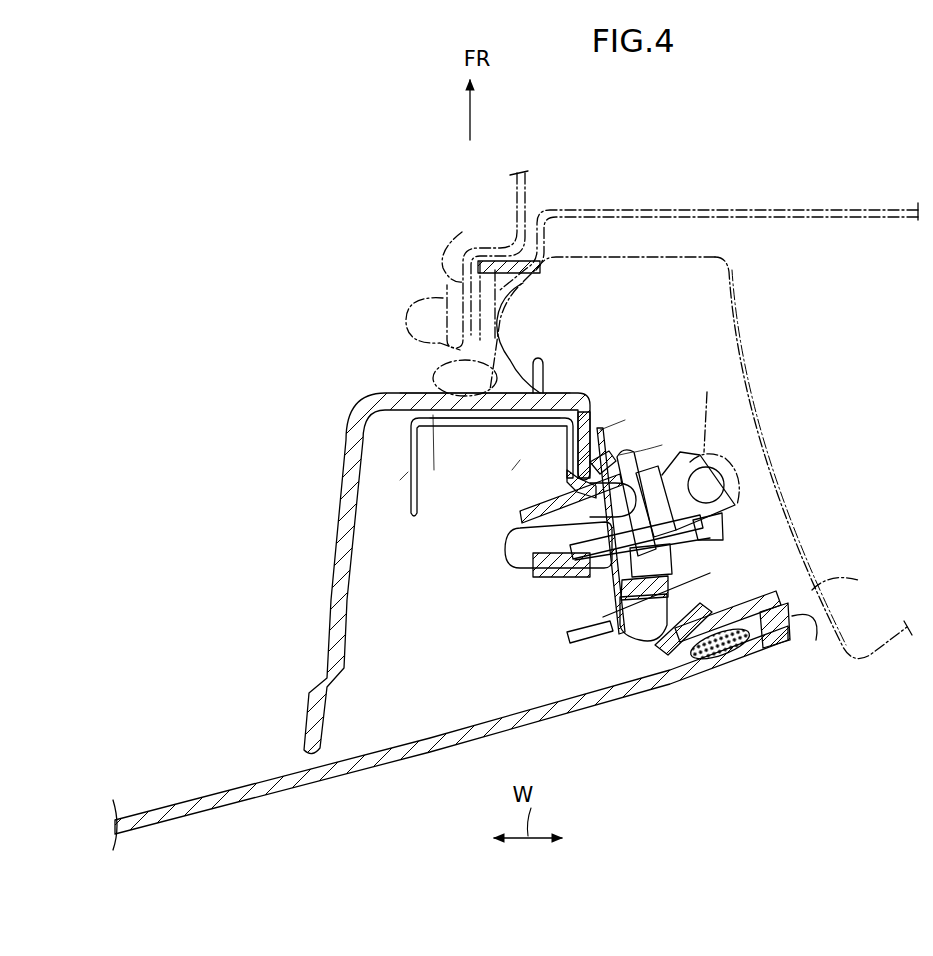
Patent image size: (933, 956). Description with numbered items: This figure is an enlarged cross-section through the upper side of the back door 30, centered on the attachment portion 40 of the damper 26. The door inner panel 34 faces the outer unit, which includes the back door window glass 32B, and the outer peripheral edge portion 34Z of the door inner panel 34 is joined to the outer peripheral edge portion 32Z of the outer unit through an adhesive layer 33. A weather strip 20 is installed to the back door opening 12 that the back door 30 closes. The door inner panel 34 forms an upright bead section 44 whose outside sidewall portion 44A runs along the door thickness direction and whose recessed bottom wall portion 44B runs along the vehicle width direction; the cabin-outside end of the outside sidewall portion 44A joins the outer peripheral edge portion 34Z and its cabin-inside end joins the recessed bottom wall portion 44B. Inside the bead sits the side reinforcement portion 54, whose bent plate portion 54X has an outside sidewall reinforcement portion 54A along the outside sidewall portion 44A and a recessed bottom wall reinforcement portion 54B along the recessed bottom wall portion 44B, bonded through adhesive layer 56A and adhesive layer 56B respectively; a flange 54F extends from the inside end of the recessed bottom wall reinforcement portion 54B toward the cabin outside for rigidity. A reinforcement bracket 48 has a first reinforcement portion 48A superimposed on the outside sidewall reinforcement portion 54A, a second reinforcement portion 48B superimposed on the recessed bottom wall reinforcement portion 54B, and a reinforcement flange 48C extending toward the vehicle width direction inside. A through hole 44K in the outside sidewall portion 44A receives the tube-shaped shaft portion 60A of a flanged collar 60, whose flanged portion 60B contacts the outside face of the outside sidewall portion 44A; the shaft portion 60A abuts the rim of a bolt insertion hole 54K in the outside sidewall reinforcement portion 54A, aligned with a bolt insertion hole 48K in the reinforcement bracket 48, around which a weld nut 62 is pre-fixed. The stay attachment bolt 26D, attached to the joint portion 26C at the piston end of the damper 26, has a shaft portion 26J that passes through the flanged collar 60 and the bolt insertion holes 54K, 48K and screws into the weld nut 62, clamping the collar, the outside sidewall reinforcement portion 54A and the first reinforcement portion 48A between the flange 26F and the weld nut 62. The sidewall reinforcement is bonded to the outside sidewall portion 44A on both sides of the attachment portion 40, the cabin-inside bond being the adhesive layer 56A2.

The back door opening 12 is at (441, 252).
The weather strip 20 is at (492, 318).
The damper 26 is at (718, 420).
The joint portion 26C is at (713, 408).
The stay attachment bolt 26D is at (662, 445).
The flange 26F is at (722, 468).
The shaft portion 26J is at (515, 543).
The back door 30 is at (733, 697).
The back door window glass 32B is at (318, 780).
The outer peripheral edge portion 32Z is at (740, 655).
The adhesive layer 33 is at (700, 652).
The door inner panel 34 is at (358, 390).
The outer peripheral edge portion 34Z is at (724, 613).
The attachment portion 40 is at (616, 426).
The upright bead section 44 is at (368, 682).
The outside sidewall portion 44A is at (630, 645).
The recessed bottom wall portion 44B is at (417, 393).
The through hole 44K is at (603, 418).
The reinforcement bracket 48 is at (600, 606).
The first reinforcement portion 48A is at (600, 594).
The second reinforcement portion 48B is at (500, 428).
The reinforcement flange 48C is at (606, 628).
The bolt insertion hole 48K is at (557, 506).
The side reinforcement portion 54 is at (597, 635).
The outside sidewall reinforcement portion 54A is at (608, 655).
The recessed bottom wall reinforcement portion 54B is at (450, 420).
The flange 54F is at (400, 480).
The bolt insertion hole 54K is at (657, 452).
The bent plate portion 54X is at (512, 470).
The adhesive layer 56A is at (632, 640).
The adhesive layer 56A2 is at (583, 440).
The adhesive layer 56B is at (440, 380).
The flanged collar 60 is at (660, 562).
The shaft portion 60A is at (656, 572).
The flanged portion 60B is at (724, 530).
The weld nut 62 is at (518, 516).